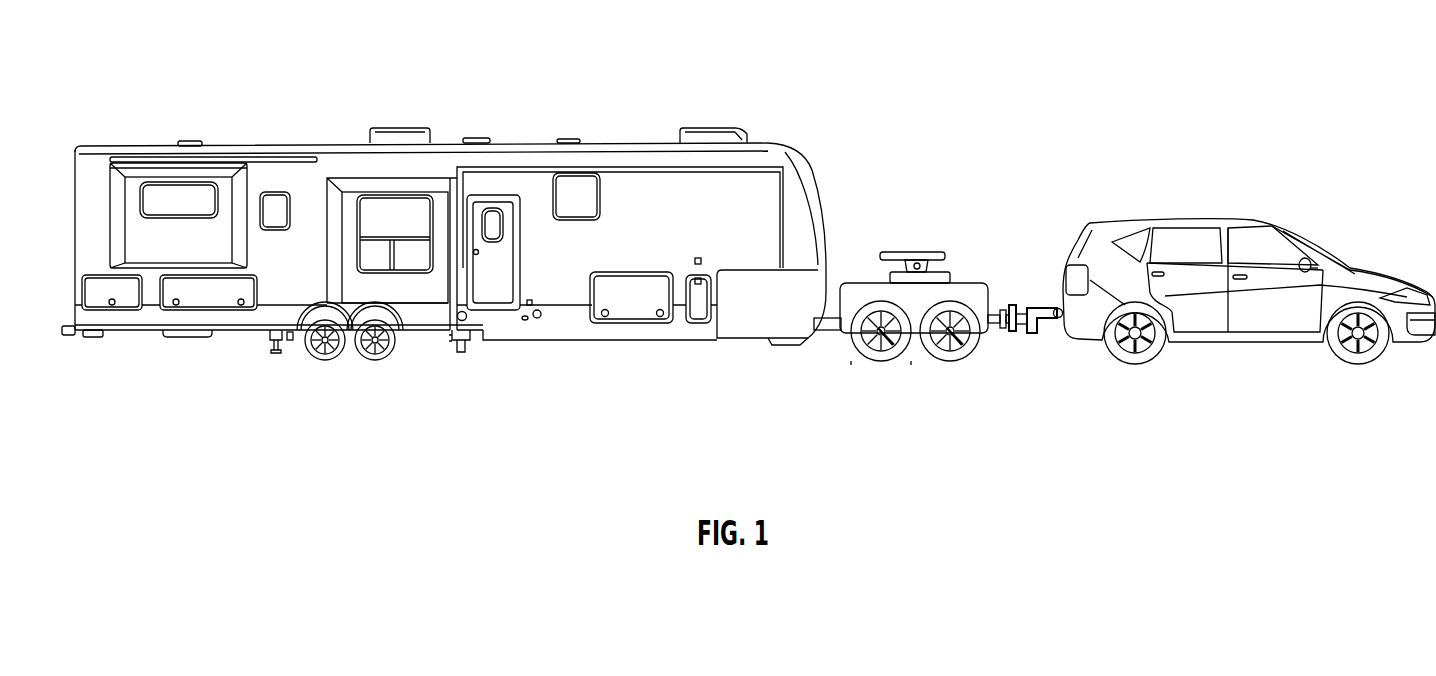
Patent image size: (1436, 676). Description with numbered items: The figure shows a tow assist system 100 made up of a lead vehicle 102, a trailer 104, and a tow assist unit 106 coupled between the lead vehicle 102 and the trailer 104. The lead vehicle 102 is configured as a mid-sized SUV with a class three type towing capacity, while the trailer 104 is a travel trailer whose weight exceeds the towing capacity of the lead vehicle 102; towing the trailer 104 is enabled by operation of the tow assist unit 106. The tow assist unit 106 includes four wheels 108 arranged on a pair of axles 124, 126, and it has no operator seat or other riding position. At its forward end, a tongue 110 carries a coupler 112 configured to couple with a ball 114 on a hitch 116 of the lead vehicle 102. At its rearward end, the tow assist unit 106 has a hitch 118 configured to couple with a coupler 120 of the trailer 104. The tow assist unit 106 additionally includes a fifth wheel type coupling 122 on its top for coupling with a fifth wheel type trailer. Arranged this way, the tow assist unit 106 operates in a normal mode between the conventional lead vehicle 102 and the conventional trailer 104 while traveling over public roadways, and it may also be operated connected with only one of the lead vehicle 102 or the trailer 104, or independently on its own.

The tow assist system 100 is at (1030, 148).
The lead vehicle 102 is at (1253, 222).
The trailer 104 is at (492, 143).
The tow assist unit 106 is at (973, 282).
The wheels 108 is at (870, 372).
The tongue 110 is at (1003, 313).
The coupler 112 is at (1018, 320).
The ball 114 is at (1027, 345).
The hitch 116 is at (1058, 324).
The hitch 118 is at (865, 295).
The coupler 120 is at (823, 330).
The fifth wheel type coupling 122 is at (922, 252).
The axle 124 is at (890, 350).
The axle 126 is at (958, 350).